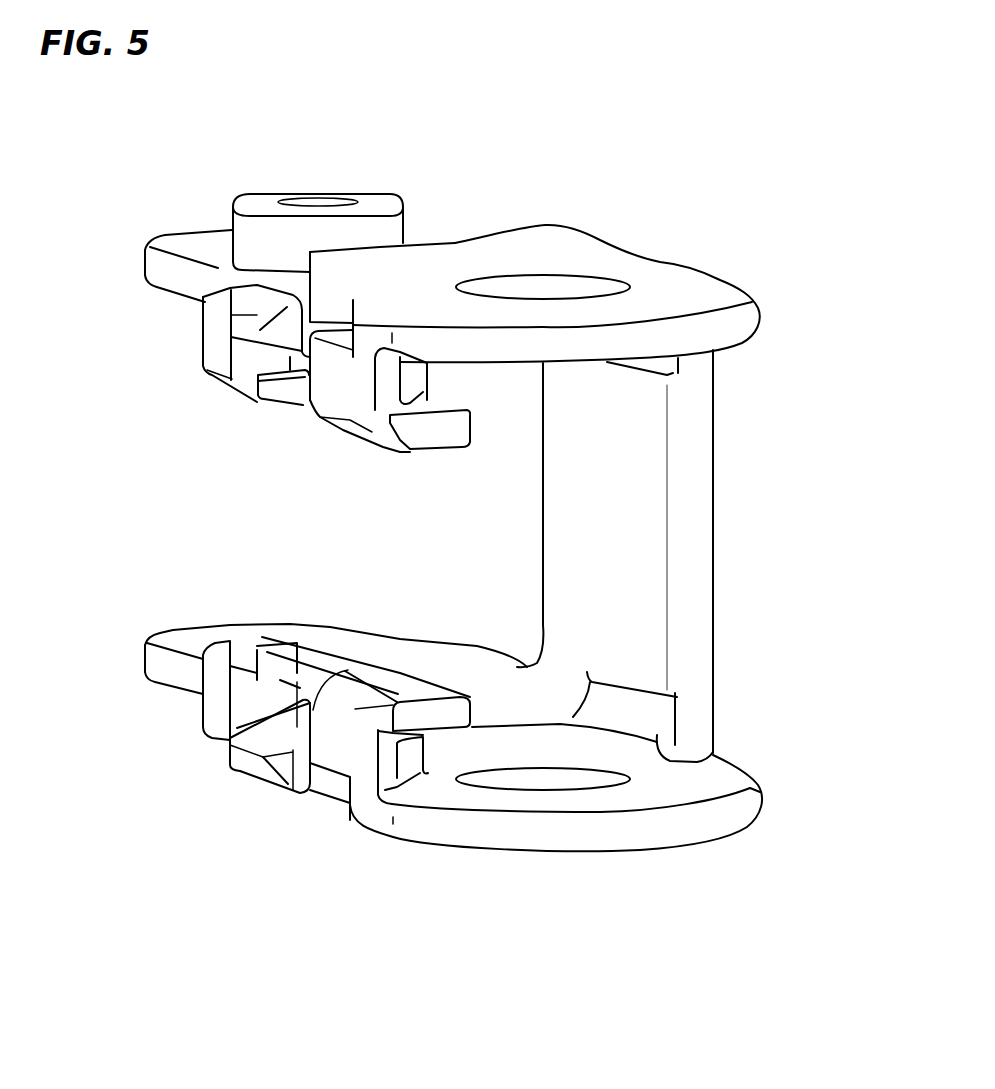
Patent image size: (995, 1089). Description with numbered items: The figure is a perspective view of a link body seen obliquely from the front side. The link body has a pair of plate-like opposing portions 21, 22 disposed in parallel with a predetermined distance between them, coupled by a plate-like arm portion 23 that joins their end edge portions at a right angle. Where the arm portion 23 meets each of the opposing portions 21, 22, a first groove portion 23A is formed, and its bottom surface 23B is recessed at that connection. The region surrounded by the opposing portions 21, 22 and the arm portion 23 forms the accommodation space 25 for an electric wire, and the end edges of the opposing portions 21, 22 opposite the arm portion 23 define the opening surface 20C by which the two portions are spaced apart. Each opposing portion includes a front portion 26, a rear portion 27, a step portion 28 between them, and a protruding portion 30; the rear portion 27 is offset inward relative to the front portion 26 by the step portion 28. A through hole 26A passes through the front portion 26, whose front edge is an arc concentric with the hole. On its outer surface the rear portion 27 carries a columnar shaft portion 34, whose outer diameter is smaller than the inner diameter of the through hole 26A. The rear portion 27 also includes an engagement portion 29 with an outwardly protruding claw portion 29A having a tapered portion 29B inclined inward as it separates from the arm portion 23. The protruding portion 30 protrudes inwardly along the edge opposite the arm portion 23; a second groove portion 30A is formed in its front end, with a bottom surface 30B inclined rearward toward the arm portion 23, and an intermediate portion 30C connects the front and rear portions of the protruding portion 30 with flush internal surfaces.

The opening surface 20C is at (158, 514).
The opposing portion 21 is at (666, 206).
The opposing portion 22 is at (462, 898).
The arm portion 23 is at (632, 517).
The first groove portion 23A is at (736, 429).
The bottom surface 23B is at (662, 362).
The accommodation space 25 is at (212, 486).
The front portion 26 is at (708, 292).
The through hole 26A is at (540, 288).
The rear portion 27 is at (177, 240).
The step portion 28 is at (471, 243).
The engagement portion 29 is at (334, 312).
The claw portion 29A is at (232, 324).
The tapered portion 29B is at (248, 317).
The protruding portion 30 is at (345, 428).
The second groove portion 30A is at (481, 374).
The bottom surface 30B is at (413, 375).
The intermediate portion 30C is at (288, 408).
The shaft portion 34 is at (372, 195).